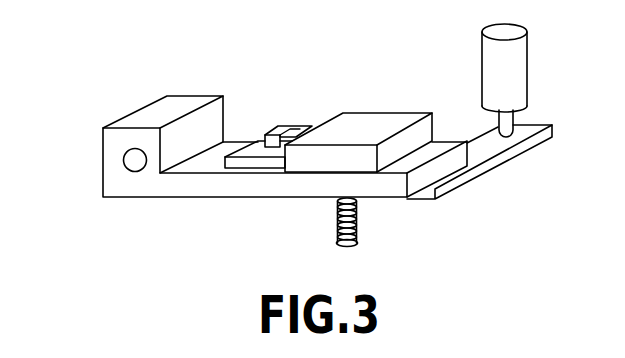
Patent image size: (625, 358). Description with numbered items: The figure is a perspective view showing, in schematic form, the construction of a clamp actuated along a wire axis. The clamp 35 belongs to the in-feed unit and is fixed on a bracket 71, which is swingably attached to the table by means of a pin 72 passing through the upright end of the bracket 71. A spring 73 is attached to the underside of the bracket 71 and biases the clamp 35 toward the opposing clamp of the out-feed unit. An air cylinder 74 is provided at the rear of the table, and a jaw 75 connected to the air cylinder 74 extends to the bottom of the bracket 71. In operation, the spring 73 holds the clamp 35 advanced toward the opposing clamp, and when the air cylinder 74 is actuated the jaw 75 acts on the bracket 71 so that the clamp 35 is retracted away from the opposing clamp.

The clamp 35 is at (295, 112).
The bracket 71 is at (218, 188).
The pin 72 is at (124, 165).
The spring 73 is at (335, 225).
The air cylinder 74 is at (517, 70).
The jaw 75 is at (490, 173).